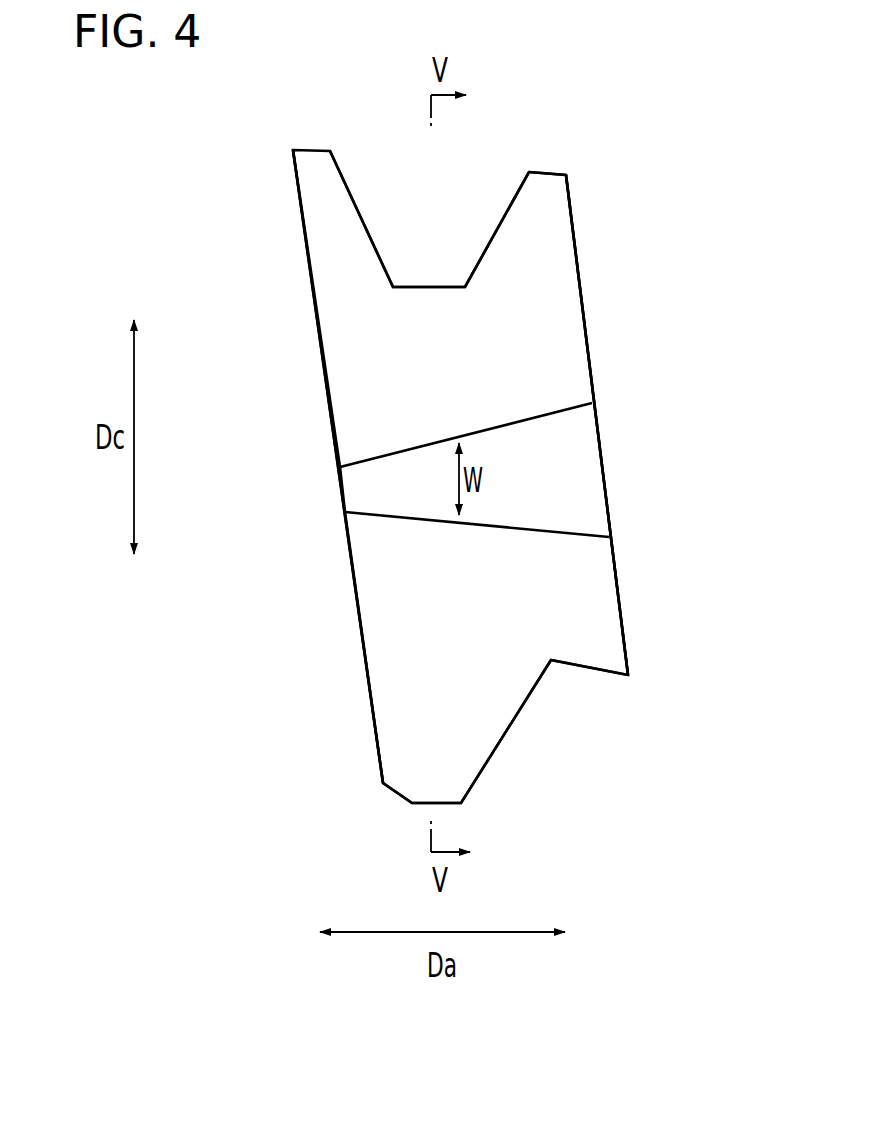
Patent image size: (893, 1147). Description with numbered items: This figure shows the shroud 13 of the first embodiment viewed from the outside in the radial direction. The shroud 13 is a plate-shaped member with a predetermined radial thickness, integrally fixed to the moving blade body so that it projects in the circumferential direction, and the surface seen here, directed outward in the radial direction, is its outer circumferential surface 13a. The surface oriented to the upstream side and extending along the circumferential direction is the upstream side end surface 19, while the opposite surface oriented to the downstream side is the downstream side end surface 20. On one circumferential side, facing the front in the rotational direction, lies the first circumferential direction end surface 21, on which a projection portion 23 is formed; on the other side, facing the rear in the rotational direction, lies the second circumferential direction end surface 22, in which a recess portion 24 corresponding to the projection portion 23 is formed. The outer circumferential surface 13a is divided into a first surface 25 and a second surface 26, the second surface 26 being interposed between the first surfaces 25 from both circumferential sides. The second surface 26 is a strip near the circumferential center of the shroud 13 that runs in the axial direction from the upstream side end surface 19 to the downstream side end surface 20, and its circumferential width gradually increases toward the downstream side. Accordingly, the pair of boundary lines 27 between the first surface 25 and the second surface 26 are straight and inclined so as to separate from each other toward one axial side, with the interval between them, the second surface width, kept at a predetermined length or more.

The shroud 13 is at (622, 183).
The outer circumferential surface 13a is at (555, 297).
The upstream side end surface 19 is at (298, 255).
The downstream side end surface 20 is at (590, 360).
The first circumferential direction end surface 21 is at (593, 672).
The second circumferential direction end surface 22 is at (542, 172).
The projection portion 23 is at (450, 775).
The recess portion 24 is at (352, 193).
The first surface 25 is at (357, 346).
The second surface 26 is at (367, 478).
The boundary lines 27 is at (518, 422).